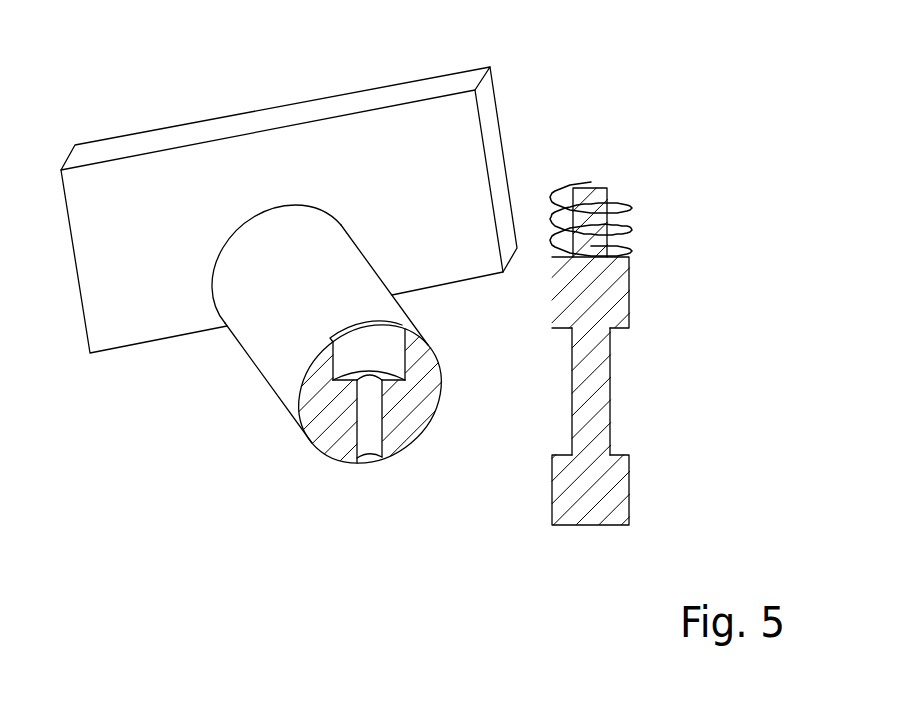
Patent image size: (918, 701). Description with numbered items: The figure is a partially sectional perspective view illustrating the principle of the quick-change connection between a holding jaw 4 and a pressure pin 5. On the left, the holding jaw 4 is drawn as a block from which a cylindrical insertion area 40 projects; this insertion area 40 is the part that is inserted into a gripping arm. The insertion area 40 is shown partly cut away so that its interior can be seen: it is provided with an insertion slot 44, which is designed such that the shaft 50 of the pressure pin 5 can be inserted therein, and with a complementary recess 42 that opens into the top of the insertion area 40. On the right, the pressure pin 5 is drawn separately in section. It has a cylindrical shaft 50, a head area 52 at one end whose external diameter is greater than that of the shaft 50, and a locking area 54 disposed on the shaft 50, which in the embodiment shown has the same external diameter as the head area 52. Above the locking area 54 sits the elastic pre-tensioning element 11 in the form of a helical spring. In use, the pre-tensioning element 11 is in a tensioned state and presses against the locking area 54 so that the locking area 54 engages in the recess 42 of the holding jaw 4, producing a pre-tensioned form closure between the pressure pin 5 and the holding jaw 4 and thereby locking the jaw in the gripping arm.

The holding jaw 4 is at (465, 82).
The insertion area 40 is at (270, 348).
The recess 42 is at (382, 340).
The insertion slot 44 is at (368, 442).
The pre-tensioning element 11 is at (623, 208).
The pressure pin 5 is at (629, 410).
The cylindrical shaft 50 is at (595, 392).
The head area 52 is at (607, 488).
The locking area 54 is at (617, 292).